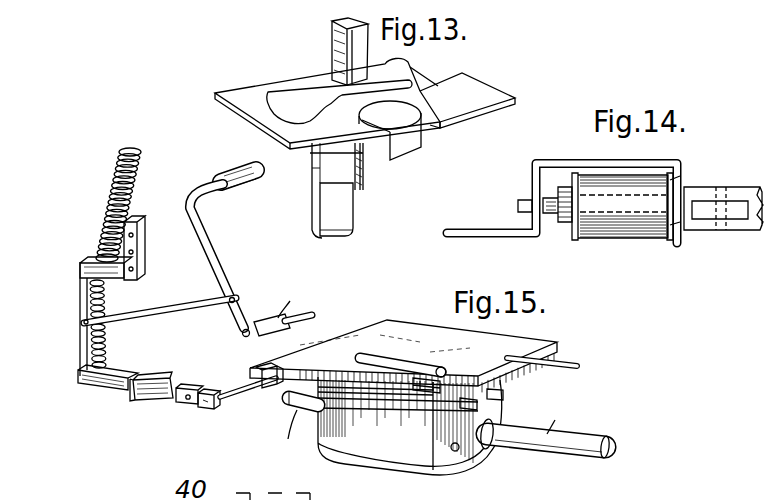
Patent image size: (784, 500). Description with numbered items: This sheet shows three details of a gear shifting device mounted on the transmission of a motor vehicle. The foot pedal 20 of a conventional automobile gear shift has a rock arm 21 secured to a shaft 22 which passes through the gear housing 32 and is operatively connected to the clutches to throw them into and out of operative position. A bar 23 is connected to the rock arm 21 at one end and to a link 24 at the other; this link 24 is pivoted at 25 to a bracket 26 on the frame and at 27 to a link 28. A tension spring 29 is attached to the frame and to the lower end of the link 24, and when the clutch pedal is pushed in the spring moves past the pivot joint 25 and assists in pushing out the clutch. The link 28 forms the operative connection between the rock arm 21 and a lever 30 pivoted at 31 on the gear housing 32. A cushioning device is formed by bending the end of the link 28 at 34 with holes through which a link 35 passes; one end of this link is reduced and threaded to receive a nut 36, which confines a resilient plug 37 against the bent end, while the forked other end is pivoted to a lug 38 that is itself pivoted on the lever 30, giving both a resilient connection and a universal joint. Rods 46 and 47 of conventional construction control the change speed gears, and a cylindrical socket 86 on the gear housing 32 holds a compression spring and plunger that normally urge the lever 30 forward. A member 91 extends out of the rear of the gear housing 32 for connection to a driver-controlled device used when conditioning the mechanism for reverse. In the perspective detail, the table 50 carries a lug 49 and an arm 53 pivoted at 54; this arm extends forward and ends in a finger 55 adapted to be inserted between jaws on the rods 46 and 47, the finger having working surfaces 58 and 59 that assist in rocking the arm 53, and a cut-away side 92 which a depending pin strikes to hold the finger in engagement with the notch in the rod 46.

In FIG. 15, the foot pedal 20 is at (231, 172).
In FIG. 15, the rock arm 21 is at (208, 254).
In FIG. 15, the shaft 22 is at (312, 315).
In FIG. 15, the bar 23 is at (167, 306).
In FIG. 15, the link 24 is at (80, 359).
In FIG. 15, the pivot 25 is at (83, 263).
In FIG. 15, the bracket 26 is at (137, 246).
In FIG. 15, the pivot 27 is at (80, 381).
In FIG. 15, the link 28 is at (110, 388).
In FIG. 15, the tension spring 29 is at (113, 200).
In FIG. 15, the lever 30 is at (240, 378).
In FIG. 15, the pivot 31 is at (263, 386).
In FIG. 15, the gear housing 32 is at (314, 405).
In FIG. 14, the bent end 34 is at (532, 188).
In FIG. 14, the link 35 is at (681, 172).
In FIG. 15, the link 35 is at (180, 396).
In FIG. 14, the nut 36 is at (564, 190).
In FIG. 15, the nut 36 is at (143, 377).
In FIG. 14, the resilient plug 37 is at (637, 228).
In FIG. 15, the resilient plug 37 is at (150, 392).
In FIG. 14, the lug 38 is at (724, 200).
In FIG. 15, the lug 38 is at (206, 398).
In FIG. 15, the gear shifting rod 46 is at (503, 392).
In FIG. 15, the gear shifting rod 47 is at (477, 405).
In FIG. 13, the lug 49 is at (332, 37).
In FIG. 13, the table 50 is at (248, 93).
In FIG. 13, the arm 53 is at (390, 158).
In FIG. 13, the pivot 54 is at (418, 102).
In FIG. 13, the finger 55 is at (348, 168).
In FIG. 13, the working surface 58 is at (318, 218).
In FIG. 13, the working surface 59 is at (333, 215).
In FIG. 15, the cylindrical socket 86 is at (400, 366).
In FIG. 15, the member 91 is at (560, 358).
In FIG. 13, the cut-away side 92 is at (330, 173).